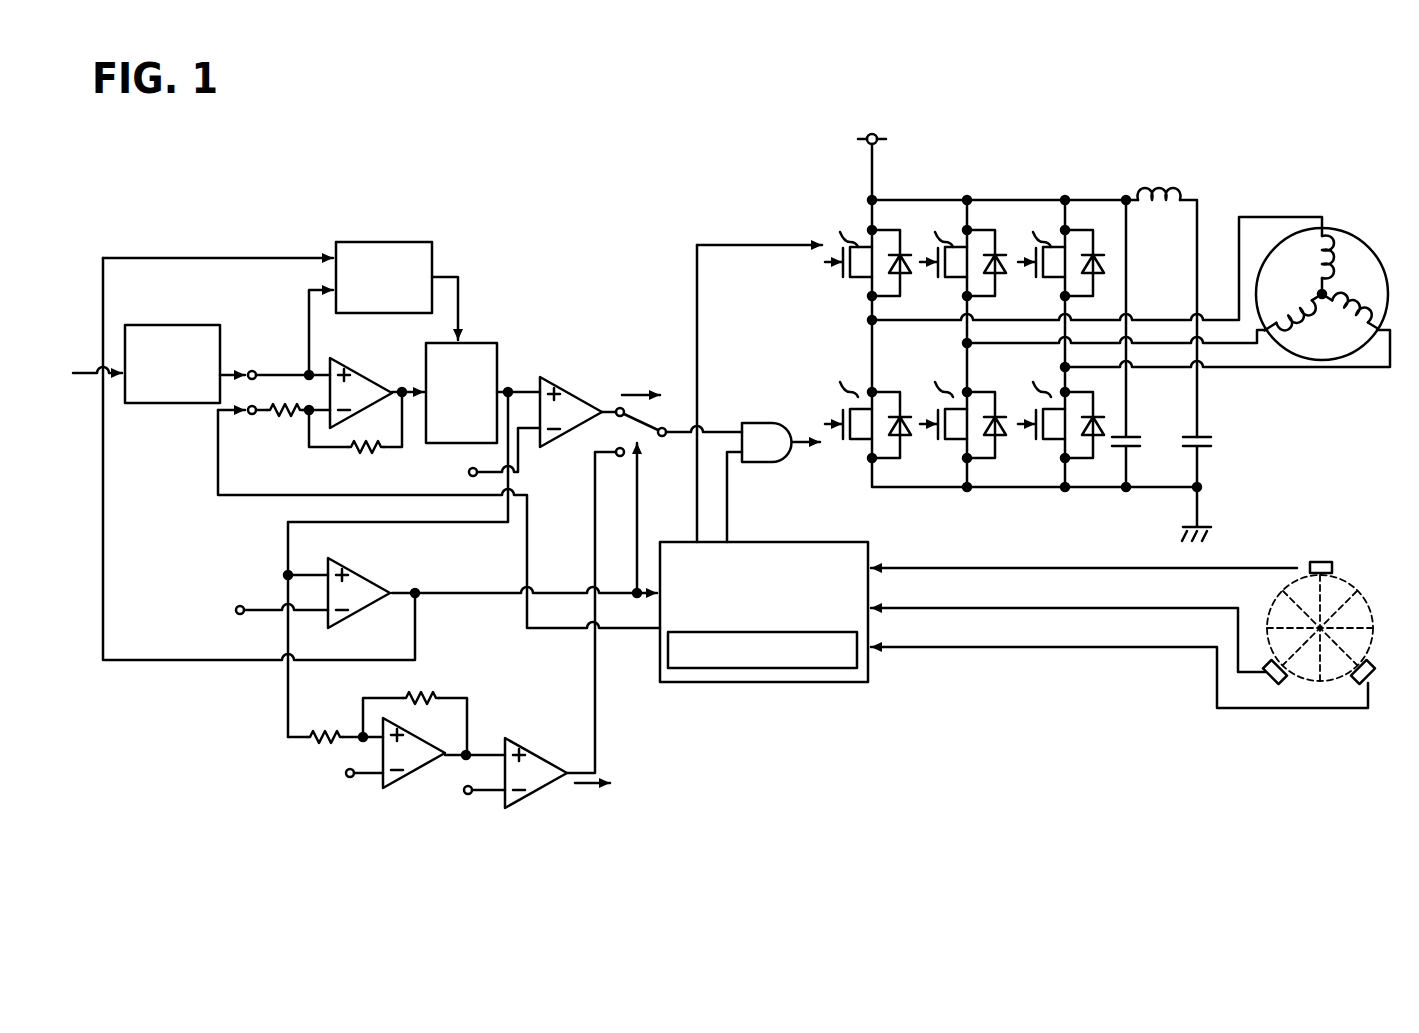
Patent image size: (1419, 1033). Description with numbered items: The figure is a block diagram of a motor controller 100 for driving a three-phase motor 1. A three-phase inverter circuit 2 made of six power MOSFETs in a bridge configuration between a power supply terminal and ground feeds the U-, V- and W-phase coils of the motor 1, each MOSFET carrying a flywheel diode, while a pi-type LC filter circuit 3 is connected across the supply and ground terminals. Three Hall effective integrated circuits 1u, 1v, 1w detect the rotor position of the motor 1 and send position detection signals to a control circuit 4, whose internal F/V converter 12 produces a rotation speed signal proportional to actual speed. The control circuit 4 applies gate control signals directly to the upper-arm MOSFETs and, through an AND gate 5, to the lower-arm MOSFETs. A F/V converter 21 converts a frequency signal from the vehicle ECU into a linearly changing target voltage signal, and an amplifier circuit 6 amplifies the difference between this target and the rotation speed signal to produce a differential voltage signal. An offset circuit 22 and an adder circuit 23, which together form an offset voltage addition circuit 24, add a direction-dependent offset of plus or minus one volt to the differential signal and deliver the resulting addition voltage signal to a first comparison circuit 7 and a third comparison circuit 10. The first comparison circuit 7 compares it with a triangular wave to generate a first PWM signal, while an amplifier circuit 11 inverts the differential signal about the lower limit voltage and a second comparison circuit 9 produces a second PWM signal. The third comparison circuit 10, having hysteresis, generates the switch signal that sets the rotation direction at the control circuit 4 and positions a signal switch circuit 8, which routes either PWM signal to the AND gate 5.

The motor controller 100 is at (702, 146).
The motor 1 is at (1347, 232).
The Hall effective integrated circuit 1u is at (1322, 562).
The Hall effective integrated circuit 1v is at (1270, 676).
The Hall effective integrated circuit 1w is at (1370, 682).
The three-phase inverter circuit 2 is at (1024, 200).
The pi-type LC filter circuit 3 is at (1207, 437).
The control circuit 4 is at (805, 683).
The AND gate 5 is at (757, 422).
The amplifier circuit 6 is at (352, 372).
The first comparison circuit 7 is at (572, 392).
The signal switch circuit 8 is at (658, 440).
The second comparison circuit 9 is at (515, 802).
The third comparison circuit 10 is at (368, 580).
The amplifier circuit 11 is at (401, 784).
The F/V converter 12 is at (716, 668).
The F/V converter 21 is at (207, 325).
The offset circuit 22 is at (375, 242).
The adder circuit 23 is at (499, 352).
The offset voltage addition circuit 24 is at (482, 326).